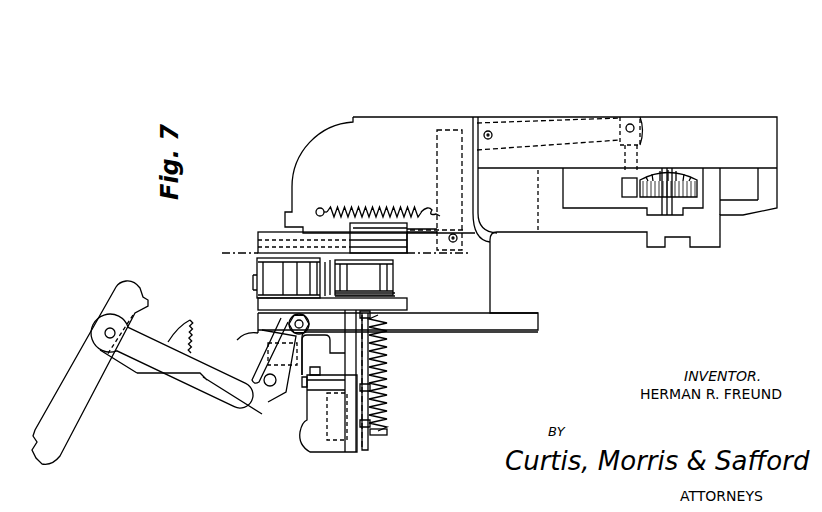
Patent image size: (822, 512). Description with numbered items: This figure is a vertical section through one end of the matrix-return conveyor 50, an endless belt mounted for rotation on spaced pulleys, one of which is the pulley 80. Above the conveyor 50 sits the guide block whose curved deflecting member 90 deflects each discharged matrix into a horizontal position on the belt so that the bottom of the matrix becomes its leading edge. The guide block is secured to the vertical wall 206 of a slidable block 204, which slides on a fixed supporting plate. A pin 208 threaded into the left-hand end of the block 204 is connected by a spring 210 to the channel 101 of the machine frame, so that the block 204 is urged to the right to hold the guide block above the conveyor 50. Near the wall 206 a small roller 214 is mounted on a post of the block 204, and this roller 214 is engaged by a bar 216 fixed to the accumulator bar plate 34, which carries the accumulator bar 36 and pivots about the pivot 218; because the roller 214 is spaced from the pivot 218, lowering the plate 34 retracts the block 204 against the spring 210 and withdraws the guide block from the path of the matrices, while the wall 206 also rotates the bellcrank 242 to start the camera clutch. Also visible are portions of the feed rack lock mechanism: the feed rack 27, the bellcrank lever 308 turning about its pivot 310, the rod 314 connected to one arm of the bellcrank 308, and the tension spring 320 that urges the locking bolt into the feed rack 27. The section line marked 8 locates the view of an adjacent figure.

The carriage / section line 8- 8 is at (238, 244).
The feed rack 27 is at (622, 188).
The accumulator bar plate 34 is at (203, 378).
The accumulator bar 36 is at (178, 322).
The conveyor 50 is at (393, 270).
The pulley 80 is at (390, 295).
The curved deflecting member 90 is at (257, 268).
The channel 101 is at (393, 313).
The slidable block 204 is at (337, 354).
The vertical wall 206 is at (258, 305).
The pin 208 is at (379, 435).
The spring 210 is at (385, 385).
The roller 214 is at (262, 348).
The bar 216 is at (250, 351).
The pivot 218 is at (273, 387).
The bellcrank 242 is at (326, 419).
The bellcrank lever 308 is at (452, 126).
The pivot 310 is at (489, 130).
The rod 314 is at (367, 233).
The spring 320 is at (387, 207).